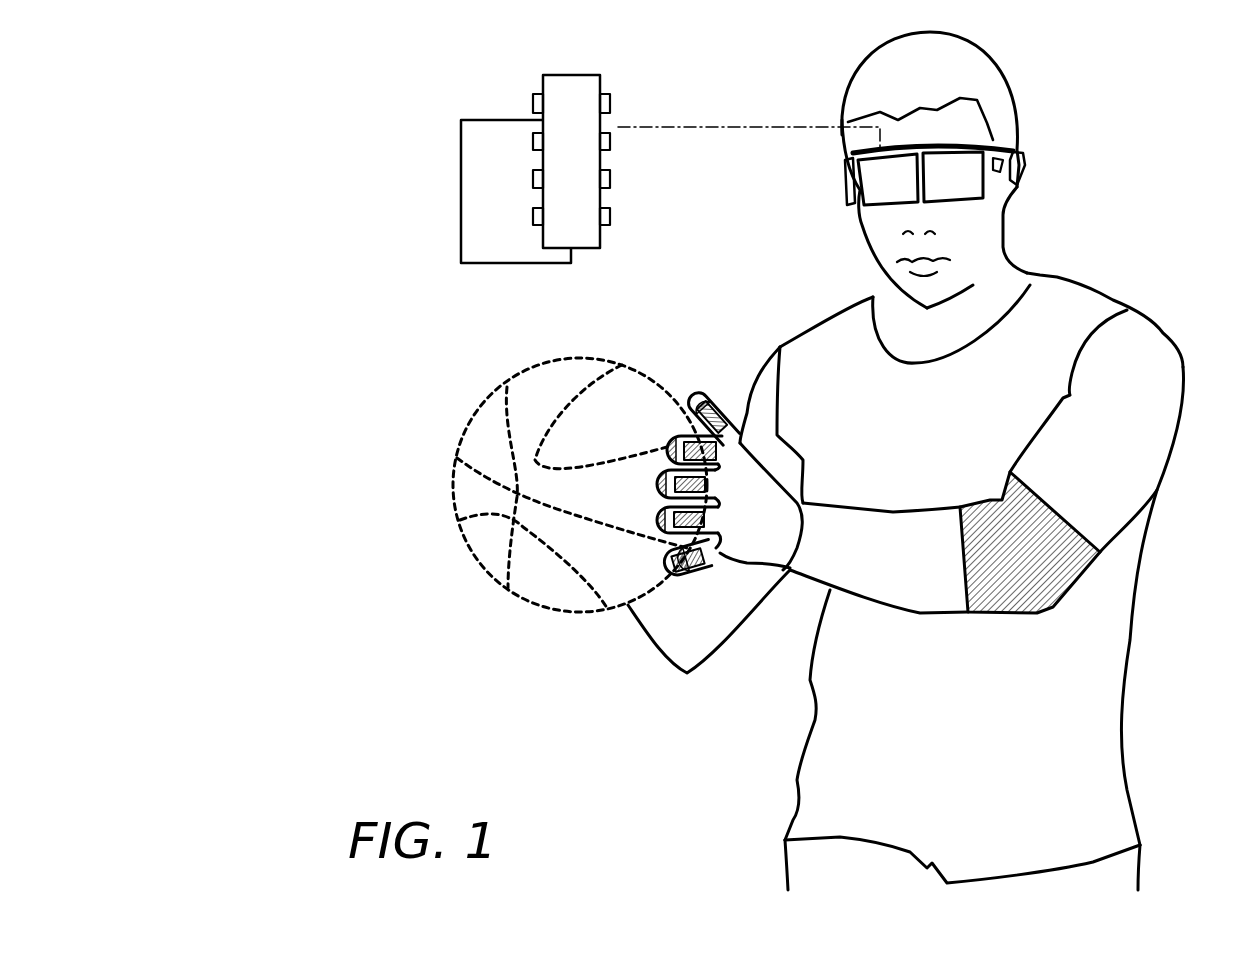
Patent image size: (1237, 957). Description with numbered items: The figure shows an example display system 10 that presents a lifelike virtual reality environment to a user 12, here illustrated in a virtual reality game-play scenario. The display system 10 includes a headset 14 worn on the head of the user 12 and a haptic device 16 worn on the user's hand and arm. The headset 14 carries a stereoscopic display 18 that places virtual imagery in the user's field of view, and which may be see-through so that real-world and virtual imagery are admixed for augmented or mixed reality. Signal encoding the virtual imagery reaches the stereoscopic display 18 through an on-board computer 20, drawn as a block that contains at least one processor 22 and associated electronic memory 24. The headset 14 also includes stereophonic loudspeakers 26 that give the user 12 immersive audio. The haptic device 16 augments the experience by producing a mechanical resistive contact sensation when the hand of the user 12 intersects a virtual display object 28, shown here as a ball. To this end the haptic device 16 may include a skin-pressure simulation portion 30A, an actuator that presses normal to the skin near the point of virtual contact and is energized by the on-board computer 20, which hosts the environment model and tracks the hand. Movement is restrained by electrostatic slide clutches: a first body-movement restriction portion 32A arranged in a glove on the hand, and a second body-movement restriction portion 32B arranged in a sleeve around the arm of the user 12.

The display system 10 is at (390, 336).
The user 12 is at (991, 440).
The headset 14 is at (822, 175).
The haptic device 16 is at (820, 532).
The stereoscopic display 18 is at (908, 198).
The on-board computer 20 is at (462, 85).
The processor 22 is at (526, 205).
The electronic memory 24 is at (583, 170).
The stereophonic loudspeakers 26 is at (1018, 165).
The virtual display object 28 is at (610, 567).
The skin-pressure simulation portion 30A is at (687, 396).
The first body-movement restriction portion 32A is at (692, 568).
The second body-movement restriction portion 32B is at (1046, 554).